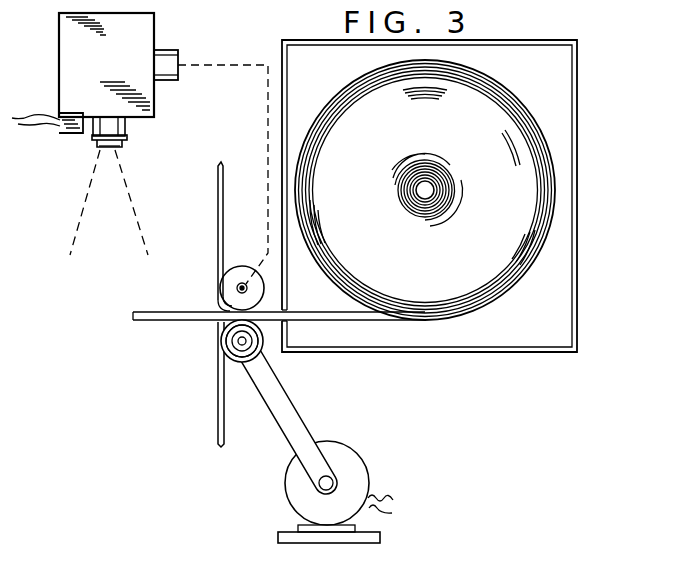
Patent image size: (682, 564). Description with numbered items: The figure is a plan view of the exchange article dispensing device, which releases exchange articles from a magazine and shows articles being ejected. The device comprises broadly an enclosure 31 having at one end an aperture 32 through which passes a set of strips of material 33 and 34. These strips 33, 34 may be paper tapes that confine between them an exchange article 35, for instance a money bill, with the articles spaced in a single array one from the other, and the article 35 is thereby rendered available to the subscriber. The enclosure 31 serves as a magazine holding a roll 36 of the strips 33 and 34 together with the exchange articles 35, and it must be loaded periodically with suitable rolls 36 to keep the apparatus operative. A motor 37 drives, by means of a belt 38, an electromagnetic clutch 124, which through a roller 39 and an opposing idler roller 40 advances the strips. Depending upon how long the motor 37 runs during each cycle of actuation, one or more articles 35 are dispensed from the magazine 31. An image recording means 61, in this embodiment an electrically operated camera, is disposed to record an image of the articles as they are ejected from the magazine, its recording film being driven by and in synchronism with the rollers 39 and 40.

The image recording means 61 is at (104, 71).
The enclosure 31 is at (577, 218).
The aperture 32 is at (281, 306).
The roll 36 is at (432, 148).
The exchange article 35 is at (148, 310).
The strip of material 33 is at (218, 232).
The strip of material 34 is at (218, 377).
The idler roller 40 is at (243, 273).
The motor 37 is at (360, 462).
The belt 38 is at (302, 415).
The electromagnetic clutch 124 is at (238, 339).
The roller 39 is at (228, 358).